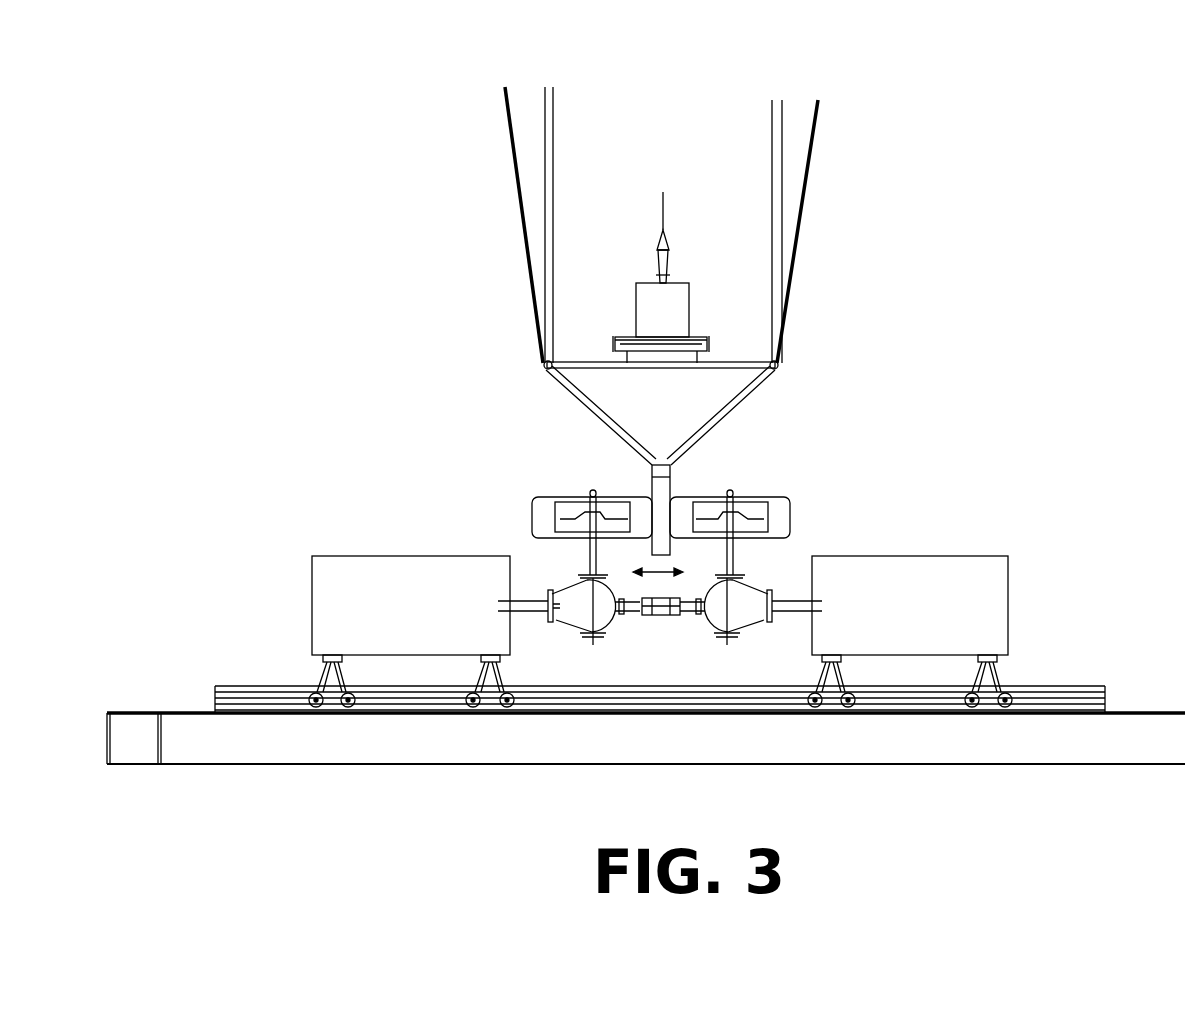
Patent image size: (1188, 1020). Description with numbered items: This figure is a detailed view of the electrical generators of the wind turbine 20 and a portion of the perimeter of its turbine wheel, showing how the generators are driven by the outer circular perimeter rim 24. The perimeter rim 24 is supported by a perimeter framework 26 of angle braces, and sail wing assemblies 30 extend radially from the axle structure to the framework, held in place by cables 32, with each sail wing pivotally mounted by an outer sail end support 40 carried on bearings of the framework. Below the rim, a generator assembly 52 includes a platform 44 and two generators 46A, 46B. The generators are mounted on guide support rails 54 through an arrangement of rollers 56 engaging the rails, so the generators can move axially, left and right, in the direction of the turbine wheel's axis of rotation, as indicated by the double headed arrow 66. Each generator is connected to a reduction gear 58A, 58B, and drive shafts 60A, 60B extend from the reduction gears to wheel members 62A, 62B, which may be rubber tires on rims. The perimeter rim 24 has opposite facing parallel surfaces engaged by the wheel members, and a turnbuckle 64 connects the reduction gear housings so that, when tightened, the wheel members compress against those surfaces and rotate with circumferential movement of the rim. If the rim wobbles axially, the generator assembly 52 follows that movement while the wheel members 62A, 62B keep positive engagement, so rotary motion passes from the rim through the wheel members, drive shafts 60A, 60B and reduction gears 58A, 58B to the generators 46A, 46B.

The wind turbine 20 is at (492, 230).
The perimeter rim 24 is at (672, 487).
The perimeter framework 26 is at (748, 408).
The sail wing assembly 30 is at (753, 198).
The cable 32 is at (800, 248).
The outer sail end support 40 is at (681, 290).
The platform 44 is at (515, 745).
The generator 46A is at (441, 567).
The generator 46B is at (905, 568).
The generator assembly 52 is at (888, 516).
The guide support rail 54 is at (605, 688).
The roller 56 is at (330, 706).
The reduction gear 58A is at (588, 622).
The reduction gear 58B is at (733, 622).
The drive shaft 60A is at (585, 560).
The drive shaft 60B is at (735, 565).
The wheel member 62A is at (563, 500).
The wheel member 62B is at (776, 500).
The turnbuckle 64 is at (677, 598).
The double headed arrow 66 is at (668, 575).